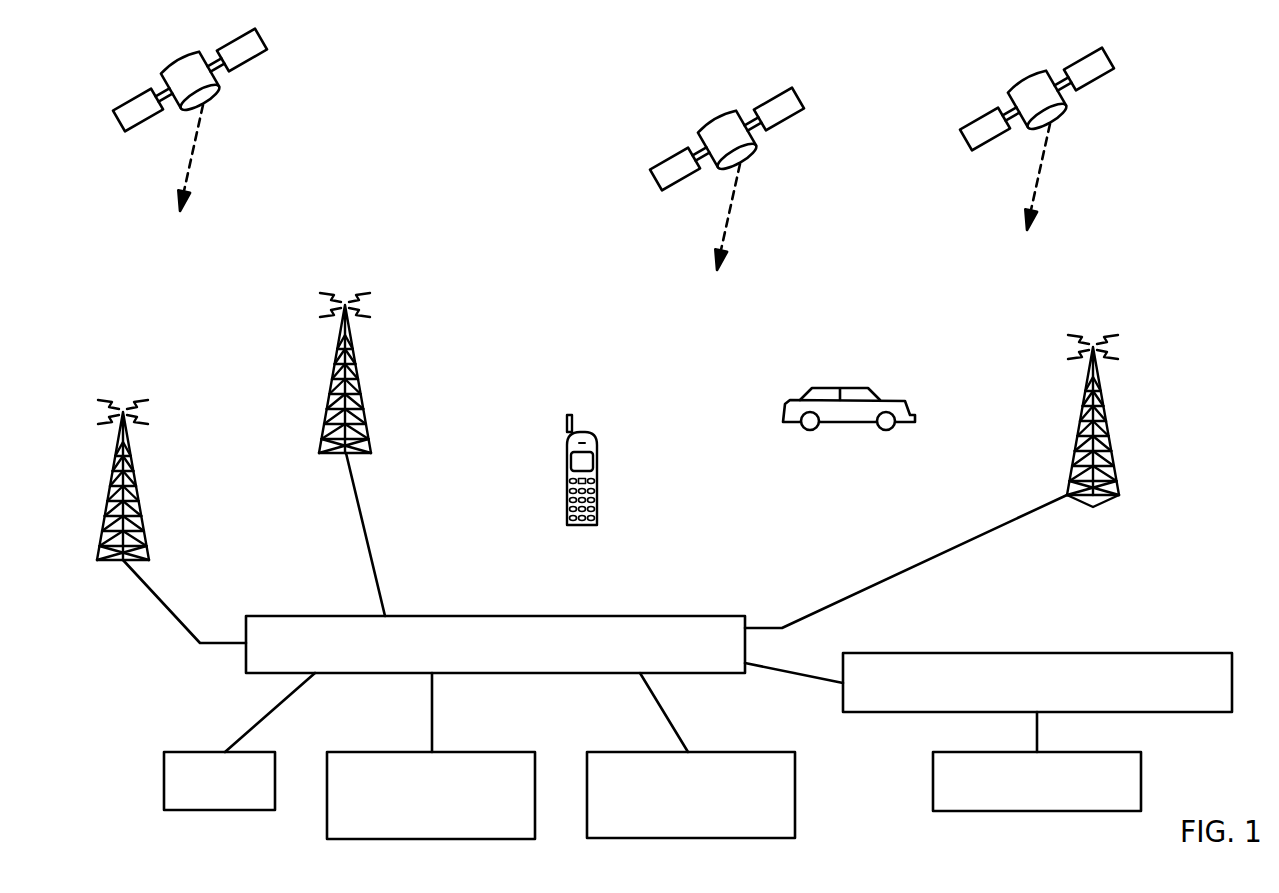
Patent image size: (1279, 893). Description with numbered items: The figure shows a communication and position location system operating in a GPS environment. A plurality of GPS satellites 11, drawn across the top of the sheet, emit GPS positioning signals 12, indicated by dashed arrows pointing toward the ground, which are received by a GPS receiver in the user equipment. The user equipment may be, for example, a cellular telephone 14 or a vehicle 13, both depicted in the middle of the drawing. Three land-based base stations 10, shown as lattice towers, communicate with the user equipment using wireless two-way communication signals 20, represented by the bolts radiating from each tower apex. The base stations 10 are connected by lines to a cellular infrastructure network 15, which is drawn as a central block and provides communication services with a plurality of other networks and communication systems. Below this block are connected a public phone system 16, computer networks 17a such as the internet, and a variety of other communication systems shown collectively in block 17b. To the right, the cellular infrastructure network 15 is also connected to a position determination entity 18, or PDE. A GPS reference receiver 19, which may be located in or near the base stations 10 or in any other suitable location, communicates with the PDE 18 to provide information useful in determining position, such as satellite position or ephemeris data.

The base stations 10 is at (139, 511).
The GPS satellites 11 is at (545, 99).
The GPS positioning signals 12 is at (194, 163).
The vehicle 13 is at (914, 394).
The cellular telephone 14 is at (599, 449).
The cellular infrastructure network 15 is at (694, 616).
The phone system 16 is at (192, 752).
The computer networks 17a is at (484, 752).
The other communication systems 17b is at (742, 752).
The position determination entity 18 is at (1180, 653).
The GPS reference receiver 19 is at (1090, 752).
The two-way communication signals 20 is at (142, 397).